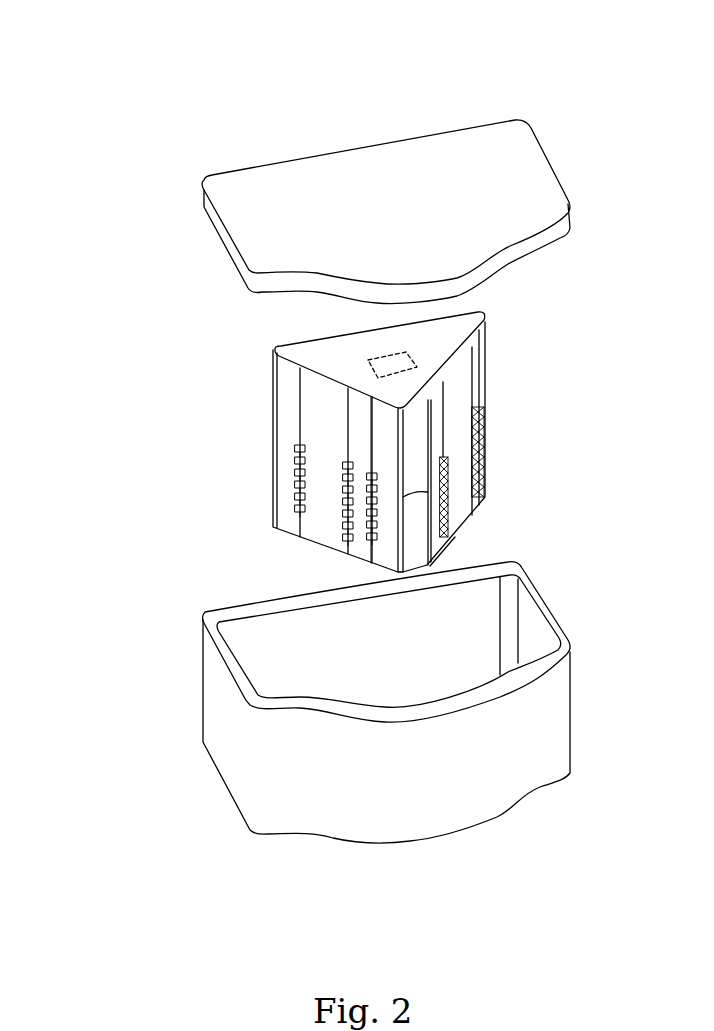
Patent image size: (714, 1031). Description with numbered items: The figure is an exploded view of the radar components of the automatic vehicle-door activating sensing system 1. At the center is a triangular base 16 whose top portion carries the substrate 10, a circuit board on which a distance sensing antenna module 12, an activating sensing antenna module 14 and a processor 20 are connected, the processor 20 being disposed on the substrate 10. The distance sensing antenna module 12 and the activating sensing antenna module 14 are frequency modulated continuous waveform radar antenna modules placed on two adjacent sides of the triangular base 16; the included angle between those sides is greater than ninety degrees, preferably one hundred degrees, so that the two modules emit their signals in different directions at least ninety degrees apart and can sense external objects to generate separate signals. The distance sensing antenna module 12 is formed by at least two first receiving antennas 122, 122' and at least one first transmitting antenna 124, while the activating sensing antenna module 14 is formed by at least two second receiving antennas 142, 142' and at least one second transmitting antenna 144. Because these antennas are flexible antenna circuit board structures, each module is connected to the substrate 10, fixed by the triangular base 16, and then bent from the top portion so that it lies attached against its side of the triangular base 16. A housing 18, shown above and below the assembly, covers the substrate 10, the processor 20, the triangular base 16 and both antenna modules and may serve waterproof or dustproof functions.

The automatic vehicle-door activating sensing system 1 is at (133, 92).
The substrate 10 is at (262, 345).
The distance sensing antenna module 12 is at (496, 440).
The activating sensing antenna module 14 is at (262, 479).
The triangular base 16 is at (273, 347).
The housing 18 is at (247, 795).
The processor 20 is at (367, 358).
The first receiving antenna 122 is at (527, 453).
The first receiving antenna 122' is at (496, 497).
The first transmitting antenna 124 is at (457, 542).
The second receiving antenna 142 is at (296, 524).
The second receiving antenna 142' is at (338, 530).
The second transmitting antenna 144 is at (298, 520).